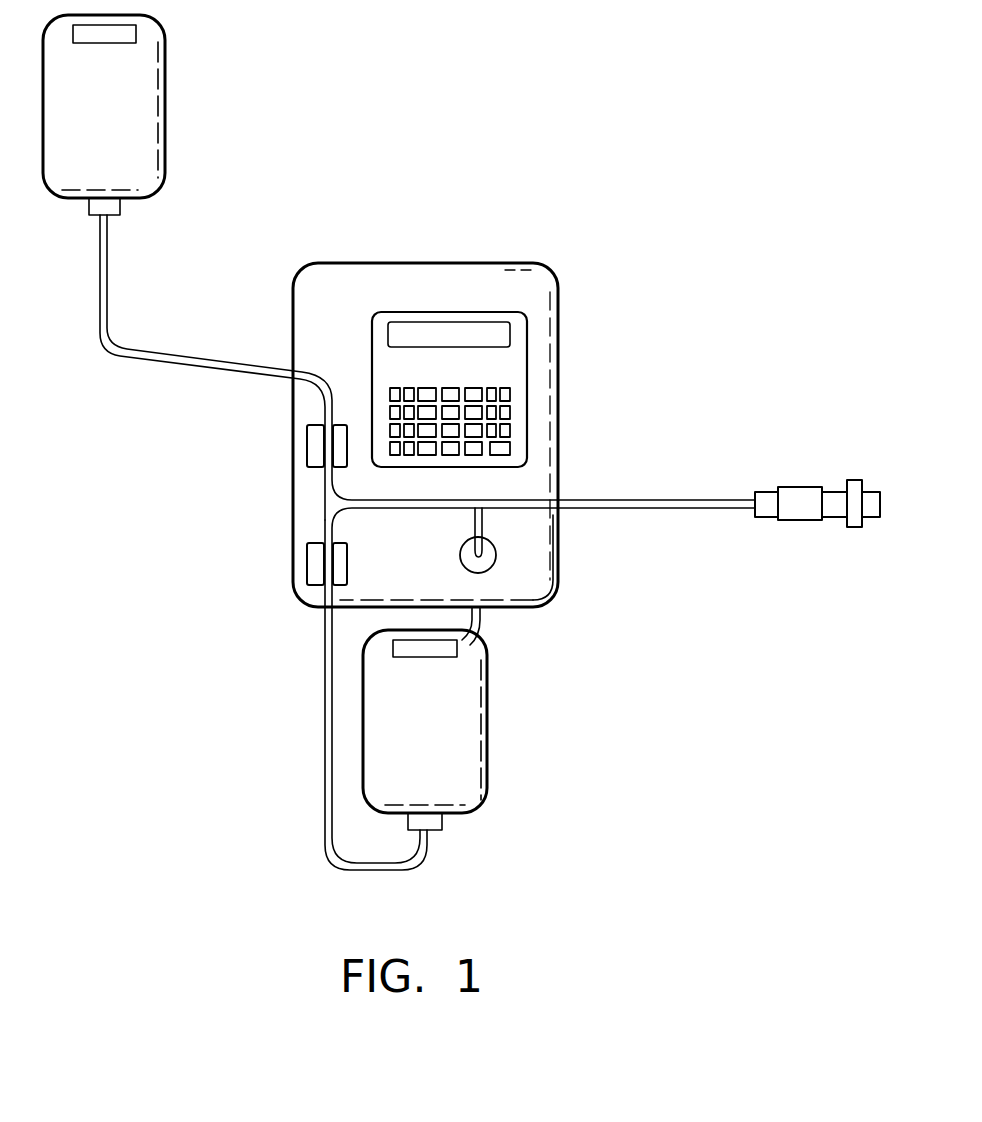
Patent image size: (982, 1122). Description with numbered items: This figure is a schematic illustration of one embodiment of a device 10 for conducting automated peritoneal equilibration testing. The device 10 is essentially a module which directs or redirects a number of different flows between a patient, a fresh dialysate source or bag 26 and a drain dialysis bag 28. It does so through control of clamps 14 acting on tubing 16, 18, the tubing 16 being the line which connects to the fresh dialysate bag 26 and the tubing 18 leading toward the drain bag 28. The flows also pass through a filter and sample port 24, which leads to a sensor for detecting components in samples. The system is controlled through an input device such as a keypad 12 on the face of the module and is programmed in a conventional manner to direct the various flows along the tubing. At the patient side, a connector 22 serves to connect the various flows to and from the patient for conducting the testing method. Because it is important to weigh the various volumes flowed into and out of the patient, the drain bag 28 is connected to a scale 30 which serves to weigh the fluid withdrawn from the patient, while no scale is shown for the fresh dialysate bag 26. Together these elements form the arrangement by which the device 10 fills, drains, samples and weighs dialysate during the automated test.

The device 10 is at (461, 442).
The keypad 12 is at (442, 313).
The clamps 14 is at (308, 563).
The tubing 16 is at (197, 372).
The tubing 18 is at (325, 653).
The connector 22 is at (800, 523).
The filter and sample port 24 is at (487, 572).
The fresh dialysate source or bag 26 is at (166, 95).
The drain dialysis bag 28 is at (487, 750).
The scale 30 is at (483, 627).